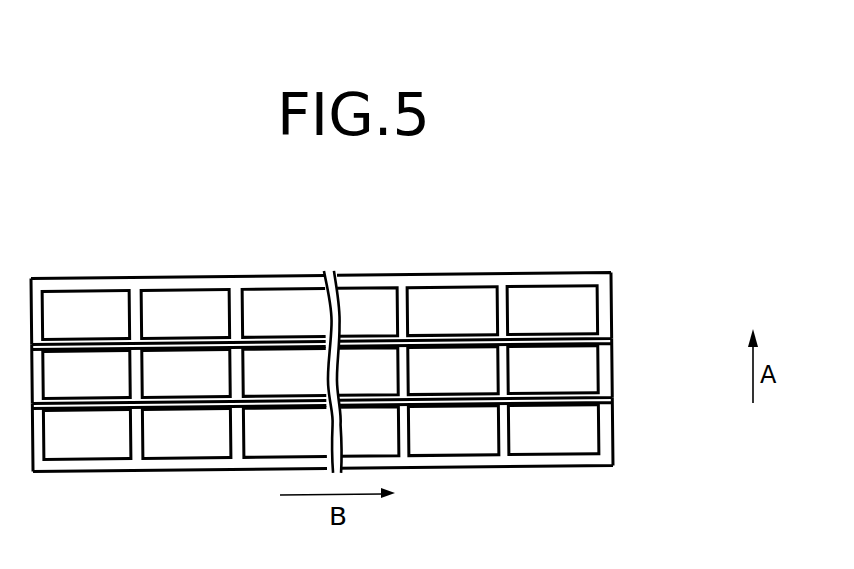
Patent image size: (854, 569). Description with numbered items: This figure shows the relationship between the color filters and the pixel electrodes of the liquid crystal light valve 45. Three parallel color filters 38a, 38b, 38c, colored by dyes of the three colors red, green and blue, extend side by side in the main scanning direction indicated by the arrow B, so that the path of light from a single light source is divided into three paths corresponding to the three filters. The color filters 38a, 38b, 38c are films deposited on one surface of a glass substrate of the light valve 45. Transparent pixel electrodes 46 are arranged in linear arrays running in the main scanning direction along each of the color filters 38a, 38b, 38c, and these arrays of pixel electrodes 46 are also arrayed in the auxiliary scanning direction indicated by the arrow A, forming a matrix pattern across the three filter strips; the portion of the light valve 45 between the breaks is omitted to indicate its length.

The liquid crystal light valve 45 is at (412, 253).
The pixel electrodes 46 is at (86, 308).
The color filter 38a is at (603, 293).
The color filter 38b is at (603, 377).
The color filter 38c is at (605, 437).